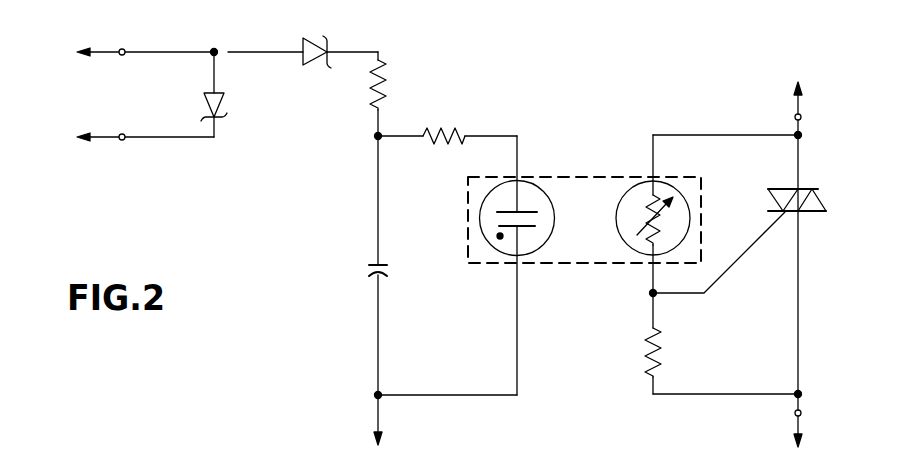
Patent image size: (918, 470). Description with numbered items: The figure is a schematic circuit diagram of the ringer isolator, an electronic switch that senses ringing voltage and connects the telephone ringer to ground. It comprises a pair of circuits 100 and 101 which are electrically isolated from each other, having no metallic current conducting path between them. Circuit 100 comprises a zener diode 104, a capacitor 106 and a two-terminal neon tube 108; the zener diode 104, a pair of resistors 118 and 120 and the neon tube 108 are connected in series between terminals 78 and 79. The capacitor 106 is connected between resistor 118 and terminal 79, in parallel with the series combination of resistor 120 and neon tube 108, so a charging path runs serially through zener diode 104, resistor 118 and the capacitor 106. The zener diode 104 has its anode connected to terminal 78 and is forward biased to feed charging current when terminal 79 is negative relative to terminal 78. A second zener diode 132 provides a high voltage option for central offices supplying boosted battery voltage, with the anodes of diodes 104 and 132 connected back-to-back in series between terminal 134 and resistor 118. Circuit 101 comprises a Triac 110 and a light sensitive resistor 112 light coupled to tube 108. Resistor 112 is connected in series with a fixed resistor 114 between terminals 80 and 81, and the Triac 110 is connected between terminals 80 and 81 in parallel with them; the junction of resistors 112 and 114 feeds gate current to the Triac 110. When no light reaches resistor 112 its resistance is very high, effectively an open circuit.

The terminal 78 is at (122, 55).
The terminal 134 is at (122, 140).
The second zener diode 132 is at (227, 120).
The zener diode 104 is at (306, 66).
The circuit 100 is at (352, 38).
The resistor 118 is at (372, 107).
The resistor 120 is at (462, 130).
The capacitor 106 is at (370, 264).
The neon tube 108 is at (480, 212).
The light sensitive resistor 112 is at (636, 177).
The circuit 101 is at (683, 119).
The terminal 80 is at (801, 116).
The Triac 110 is at (805, 191).
The resistor 114 is at (648, 368).
The terminal 81 is at (797, 412).
The terminal 79 is at (376, 395).